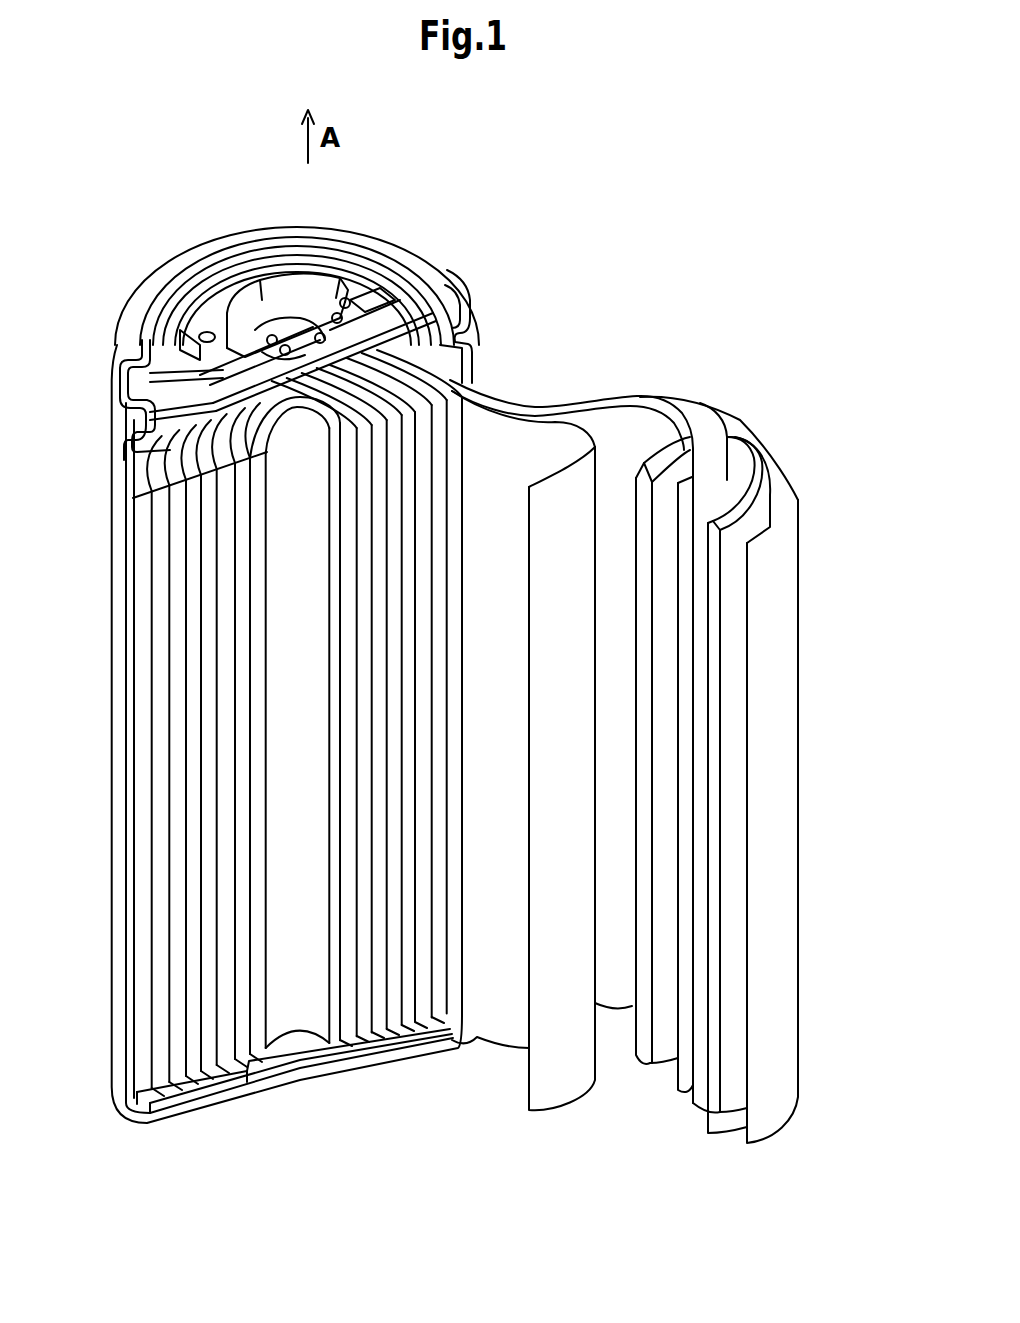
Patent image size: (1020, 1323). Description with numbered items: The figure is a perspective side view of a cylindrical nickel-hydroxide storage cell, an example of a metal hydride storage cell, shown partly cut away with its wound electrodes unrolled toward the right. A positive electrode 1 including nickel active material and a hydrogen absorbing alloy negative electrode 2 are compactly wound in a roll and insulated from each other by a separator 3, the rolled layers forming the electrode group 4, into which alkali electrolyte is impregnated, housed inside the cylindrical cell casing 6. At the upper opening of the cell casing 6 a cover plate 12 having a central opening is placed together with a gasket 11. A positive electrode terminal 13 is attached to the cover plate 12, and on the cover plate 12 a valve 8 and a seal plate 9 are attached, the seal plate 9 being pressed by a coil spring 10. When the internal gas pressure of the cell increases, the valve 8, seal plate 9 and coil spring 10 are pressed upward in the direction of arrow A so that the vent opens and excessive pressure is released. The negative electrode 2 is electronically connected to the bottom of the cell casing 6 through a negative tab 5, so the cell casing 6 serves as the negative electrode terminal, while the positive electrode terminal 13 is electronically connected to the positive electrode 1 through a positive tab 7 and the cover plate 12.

The positive electrode 1 is at (643, 690).
The negative electrode 2 is at (715, 652).
The separator 3 is at (693, 590).
The electrode group 4 is at (524, 746).
The negative tab 5 is at (193, 1090).
The cell casing 6 is at (125, 885).
The positive tab 7 is at (115, 428).
The valve 8 is at (392, 290).
The seal plate 9 is at (320, 342).
The coil spring 10 is at (333, 287).
The gasket 11 is at (115, 393).
The cover plate 12 is at (470, 330).
The positive electrode terminal 13 is at (273, 290).